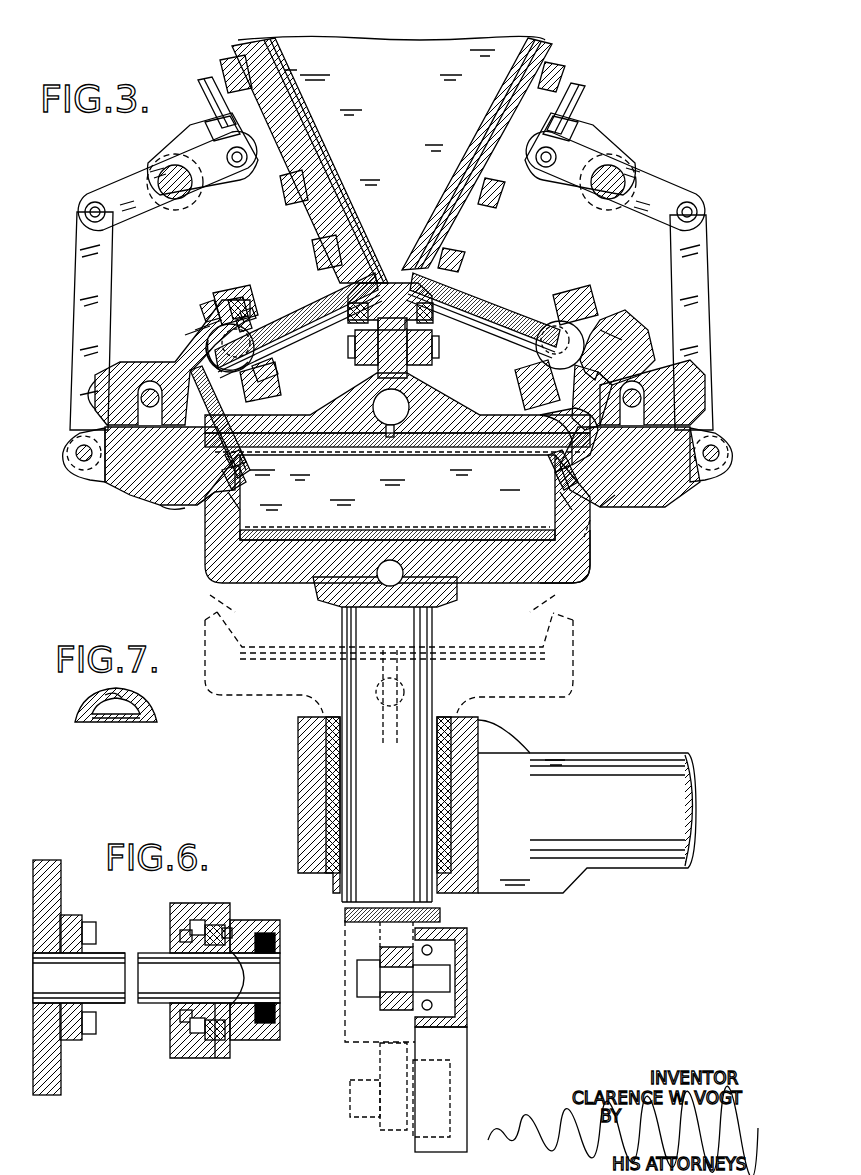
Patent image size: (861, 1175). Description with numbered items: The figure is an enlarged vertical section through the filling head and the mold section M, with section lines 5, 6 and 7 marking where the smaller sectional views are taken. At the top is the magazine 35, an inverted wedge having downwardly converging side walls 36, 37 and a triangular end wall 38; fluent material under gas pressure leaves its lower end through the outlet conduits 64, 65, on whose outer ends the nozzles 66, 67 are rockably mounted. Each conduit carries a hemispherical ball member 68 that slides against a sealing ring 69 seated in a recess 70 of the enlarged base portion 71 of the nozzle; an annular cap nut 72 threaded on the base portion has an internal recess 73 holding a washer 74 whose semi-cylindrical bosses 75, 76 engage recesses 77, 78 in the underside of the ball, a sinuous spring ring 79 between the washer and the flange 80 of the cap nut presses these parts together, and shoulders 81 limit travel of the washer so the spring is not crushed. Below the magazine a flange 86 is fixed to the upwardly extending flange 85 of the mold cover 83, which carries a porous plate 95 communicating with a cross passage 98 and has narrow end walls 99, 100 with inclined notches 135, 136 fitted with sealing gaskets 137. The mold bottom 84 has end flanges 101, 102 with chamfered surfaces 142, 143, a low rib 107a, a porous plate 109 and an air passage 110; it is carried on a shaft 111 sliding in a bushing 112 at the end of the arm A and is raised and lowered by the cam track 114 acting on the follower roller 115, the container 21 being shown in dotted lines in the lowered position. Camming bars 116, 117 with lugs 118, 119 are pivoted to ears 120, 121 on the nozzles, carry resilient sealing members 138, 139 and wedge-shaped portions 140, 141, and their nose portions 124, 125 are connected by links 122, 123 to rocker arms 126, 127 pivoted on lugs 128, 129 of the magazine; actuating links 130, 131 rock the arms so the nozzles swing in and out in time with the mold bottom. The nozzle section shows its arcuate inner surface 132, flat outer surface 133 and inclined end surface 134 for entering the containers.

In FIG. 3, the magazine 35 is at (409, 148).
In FIG. 3, the side wall 36 is at (315, 178).
In FIG. 3, the side wall 37 is at (492, 126).
In FIG. 3, the end wall 38 is at (408, 45).
In FIG. 3, the section line 5 is at (392, 186).
In FIG. 3, the section line 6— 6 is at (406, 240).
In FIG. 3, the section line 7— 7 is at (194, 464).
In FIG. 3, the rocker arm 126 is at (130, 178).
In FIG. 3, the rocker arm 127 is at (660, 192).
In FIG. 3, the lug 128 is at (186, 142).
In FIG. 3, the lug 129 is at (604, 146).
In FIG. 3, the actuating link 130 is at (204, 78).
In FIG. 3, the actuating link 131 is at (584, 96).
In FIG. 3, the link 122 is at (80, 313).
In FIG. 3, the link 123 is at (708, 288).
In FIG. 3, the outlet conduit 64 is at (293, 300).
In FIG. 3, the outlet conduit 65 is at (497, 302).
In FIG. 6, the outlet conduit 65 is at (145, 954).
In FIG. 3, the mold cover 83 is at (336, 410).
In FIG. 3, the upwardly extending flange 85 is at (360, 349).
In FIG. 3, the flange 86 is at (420, 349).
In FIG. 3, the lug 118 is at (132, 378).
In FIG. 3, the ear 120 is at (106, 395).
In FIG. 3, the lug 119 is at (656, 383).
In FIG. 3, the ear 121 is at (680, 396).
In FIG. 3, the internal recess 73 is at (222, 292).
In FIG. 3, the cap nut 72 is at (237, 296).
In FIG. 6, the cap nut 72 is at (184, 1060).
In FIG. 3, the washer 74 is at (210, 302).
In FIG. 6, the washer 74 is at (200, 906).
In FIG. 3, the shoulder 81 is at (238, 312).
In FIG. 6, the shoulder 81 is at (186, 1038).
In FIG. 3, the spring ring 79 is at (236, 324).
In FIG. 6, the spring ring 79 is at (180, 932).
In FIG. 3, the hemispherical member 68 is at (203, 312).
In FIG. 6, the hemispherical member 68 is at (228, 1010).
In FIG. 3, the sealing ring 69 is at (200, 324).
In FIG. 6, the sealing ring 69 is at (275, 1013).
In FIG. 3, the recess 70 is at (186, 335).
In FIG. 6, the recess 70 is at (272, 940).
In FIG. 3, the recess 77 is at (230, 347).
In FIG. 6, the recess 77 is at (232, 918).
In FIG. 3, the flange 80 is at (272, 372).
In FIG. 6, the flange 80 is at (180, 1020).
In FIG. 3, the semi-cylindrical boss 75 is at (210, 384).
In FIG. 6, the semi-cylindrical boss 75 is at (219, 908).
In FIG. 3, the base portion 71 is at (262, 400).
In FIG. 6, the base portion 71 is at (270, 924).
In FIG. 3, the nozzle 66 is at (208, 410).
In FIG. 7, the nozzle 66 is at (148, 708).
In FIG. 3, the camming bar 116 is at (130, 488).
In FIG. 3, the camming bar 117 is at (630, 467).
In FIG. 3, the nose portion 124 is at (63, 459).
In FIG. 3, the nose portion 125 is at (720, 459).
In FIG. 3, the resilient sealing member 138 is at (170, 508).
In FIG. 3, the wedge-shaped portion 140 is at (205, 505).
In FIG. 3, the notch 135 is at (240, 462).
In FIG. 3, the end wall 99 is at (232, 468).
In FIG. 3, the inclined end surface 134 is at (230, 482).
In FIG. 3, the chamfered surface 142 is at (230, 504).
In FIG. 3, the recess 78 is at (620, 336).
In FIG. 6, the recess 78 is at (232, 1040).
In FIG. 3, the semi-cylindrical boss 76 is at (560, 346).
In FIG. 6, the semi-cylindrical boss 76 is at (215, 1060).
In FIG. 3, the end wall 100 is at (536, 412).
In FIG. 3, the nozzle 67 is at (576, 404).
In FIG. 6, the nozzle 67 is at (282, 1036).
In FIG. 3, the sealing gasket 137 is at (548, 463).
In FIG. 3, the notch 136 is at (562, 478).
In FIG. 3, the chamfered surface 143 is at (556, 512).
In FIG. 3, the resilient sealing member 139 is at (600, 507).
In FIG. 3, the wedge-shaped portion 141 is at (586, 522).
In FIG. 3, the mold section M is at (606, 553).
In FIG. 3, the porous metal plate 95 is at (355, 447).
In FIG. 3, the cross passage 98 is at (396, 440).
In FIG. 3, the end flange 101 is at (207, 527).
In FIG. 3, the porous plate 109 is at (352, 530).
In FIG. 3, the rib 107a is at (420, 530).
In FIG. 3, the end flange 102 is at (594, 558).
In FIG. 3, the mold bottom 84 is at (205, 560).
In FIG. 3, the tubular container 21 is at (214, 595).
In FIG. 3, the passage 110 is at (378, 574).
In FIG. 3, the shaft 111 is at (400, 821).
In FIG. 3, the bushing 112 is at (335, 748).
In FIG. 3, the arm A is at (605, 792).
In FIG. 3, the cam track 114 is at (462, 988).
In FIG. 3, the follower roller 115 is at (452, 950).
In FIG. 7, the arcuate inner surface portion 132 is at (116, 690).
In FIG. 7, the flat outer surface portion 133 is at (130, 724).